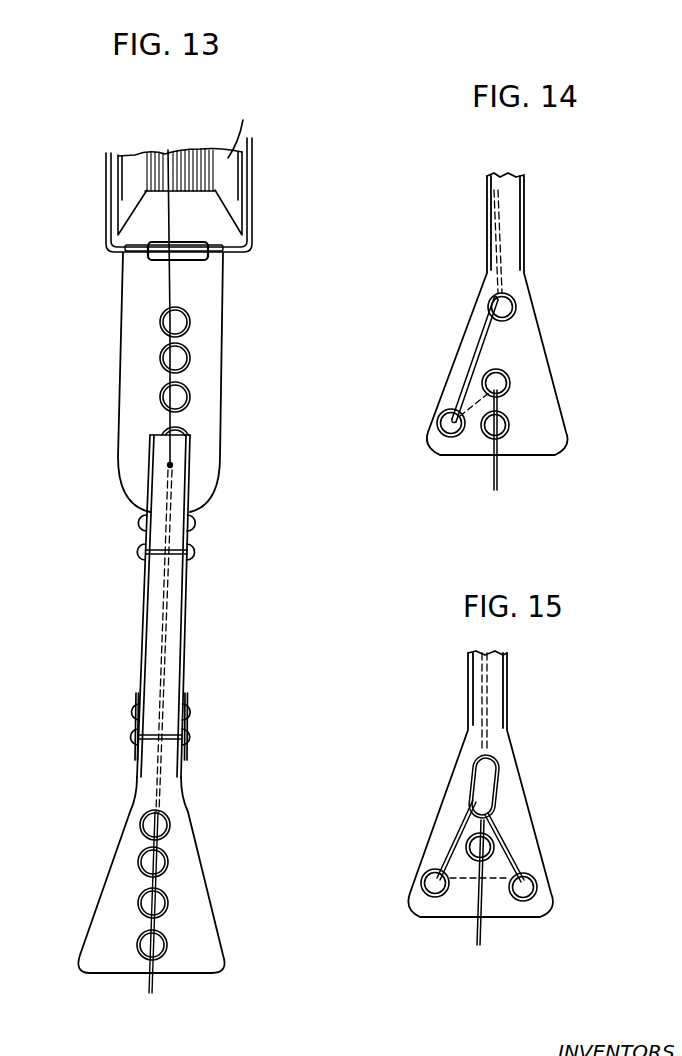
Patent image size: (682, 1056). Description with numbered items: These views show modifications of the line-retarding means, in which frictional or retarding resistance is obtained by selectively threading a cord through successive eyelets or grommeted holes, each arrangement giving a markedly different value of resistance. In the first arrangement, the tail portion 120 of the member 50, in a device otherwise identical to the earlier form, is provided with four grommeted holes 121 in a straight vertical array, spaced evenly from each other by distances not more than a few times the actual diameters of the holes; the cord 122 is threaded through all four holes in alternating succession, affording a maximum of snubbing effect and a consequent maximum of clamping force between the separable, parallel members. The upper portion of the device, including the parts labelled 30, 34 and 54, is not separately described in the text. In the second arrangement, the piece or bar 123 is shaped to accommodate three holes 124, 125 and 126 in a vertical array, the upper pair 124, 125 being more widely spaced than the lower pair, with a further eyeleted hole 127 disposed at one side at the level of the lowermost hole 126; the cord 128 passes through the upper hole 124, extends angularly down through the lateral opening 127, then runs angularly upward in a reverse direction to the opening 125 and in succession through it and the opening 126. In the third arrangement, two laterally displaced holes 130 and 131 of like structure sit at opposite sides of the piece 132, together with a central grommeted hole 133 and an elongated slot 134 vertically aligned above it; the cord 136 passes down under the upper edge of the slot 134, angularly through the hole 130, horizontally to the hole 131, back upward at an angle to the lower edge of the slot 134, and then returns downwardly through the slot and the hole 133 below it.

In FIG. 13, the spool assembly 30 is at (256, 198).
In FIG. 13, the wire 34 is at (242, 128).
In FIG. 13, the cord 122 is at (163, 226).
In FIG. 13, the upper strap 54 is at (210, 345).
In FIG. 13, the member 50 is at (143, 639).
In FIG. 13, the tail portion 120 is at (112, 902).
In FIG. 13, the grommeted holes 121 is at (165, 862).
In FIG. 14, the piece or bar 123 is at (450, 377).
In FIG. 14, the upper hole 124 is at (516, 305).
In FIG. 14, the hole 125 is at (512, 380).
In FIG. 14, the lowermost hole 126 is at (512, 426).
In FIG. 14, the eyeleted hole 127 is at (447, 434).
In FIG. 14, the cord 128 is at (478, 333).
In FIG. 15, the hole 130 is at (431, 892).
In FIG. 15, the hole 131 is at (523, 898).
In FIG. 15, the piece 132 is at (515, 818).
In FIG. 15, the central grommeted hole 133 is at (493, 850).
In FIG. 15, the elongated slot 134 is at (500, 783).
In FIG. 15, the cord 136 is at (487, 700).